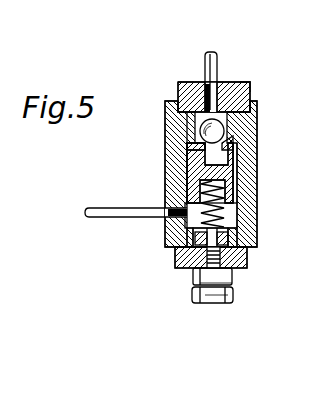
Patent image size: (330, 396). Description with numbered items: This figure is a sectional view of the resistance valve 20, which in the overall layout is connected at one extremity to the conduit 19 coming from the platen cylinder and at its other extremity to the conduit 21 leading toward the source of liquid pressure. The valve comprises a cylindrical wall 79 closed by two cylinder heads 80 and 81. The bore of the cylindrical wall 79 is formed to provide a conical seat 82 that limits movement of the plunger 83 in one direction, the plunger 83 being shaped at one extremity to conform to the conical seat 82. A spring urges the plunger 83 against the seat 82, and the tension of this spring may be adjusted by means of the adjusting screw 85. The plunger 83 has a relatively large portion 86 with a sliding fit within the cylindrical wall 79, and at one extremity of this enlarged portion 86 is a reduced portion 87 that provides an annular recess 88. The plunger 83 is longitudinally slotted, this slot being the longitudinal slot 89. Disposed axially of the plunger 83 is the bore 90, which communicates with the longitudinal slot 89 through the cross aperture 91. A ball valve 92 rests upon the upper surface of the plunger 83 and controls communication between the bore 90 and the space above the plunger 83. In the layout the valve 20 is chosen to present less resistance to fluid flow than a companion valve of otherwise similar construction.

The conduit 19 is at (104, 217).
The resistance valve 20 is at (258, 178).
The conduit 21 is at (204, 57).
The cylindrical wall 79 is at (258, 143).
The cylinder head 80 is at (224, 82).
The cylinder head 81 is at (226, 218).
The conical seat 82 is at (258, 112).
The plunger 83 is at (168, 173).
The adjusting screw 85 is at (247, 260).
The relatively large portion 86 is at (167, 193).
The reduced portion 87 is at (188, 153).
The annular recess 88 is at (200, 131).
The longitudinal slot 89 is at (256, 160).
The bore 90 is at (170, 159).
The cross aperture 91 is at (252, 137).
The ball valve 92 is at (248, 83).